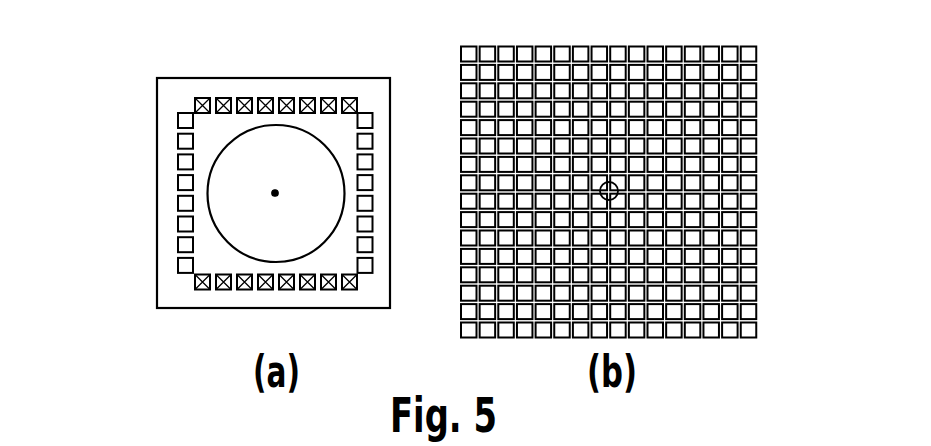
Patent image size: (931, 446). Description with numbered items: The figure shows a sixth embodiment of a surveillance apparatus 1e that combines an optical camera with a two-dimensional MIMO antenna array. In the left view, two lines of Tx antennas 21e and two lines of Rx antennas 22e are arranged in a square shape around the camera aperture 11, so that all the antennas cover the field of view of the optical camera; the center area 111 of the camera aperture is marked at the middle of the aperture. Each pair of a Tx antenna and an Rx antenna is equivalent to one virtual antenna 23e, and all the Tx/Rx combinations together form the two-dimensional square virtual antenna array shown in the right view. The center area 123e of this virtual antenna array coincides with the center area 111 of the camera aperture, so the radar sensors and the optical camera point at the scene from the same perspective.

The surveillance apparatus 1e is at (125, 80).
The camera aperture 11 is at (207, 185).
The center area of the camera aperture 111 is at (275, 193).
The Tx antennas 21e is at (178, 243).
The Rx antennas 22e is at (328, 98).
The virtual antenna 23e is at (758, 52).
The center area of the virtual antenna array 123e is at (614, 184).